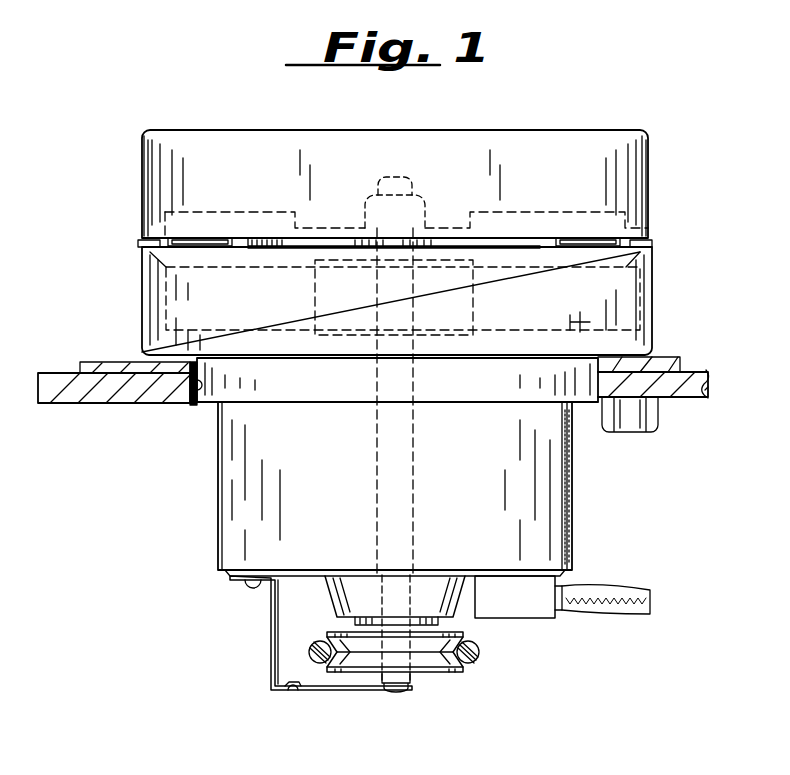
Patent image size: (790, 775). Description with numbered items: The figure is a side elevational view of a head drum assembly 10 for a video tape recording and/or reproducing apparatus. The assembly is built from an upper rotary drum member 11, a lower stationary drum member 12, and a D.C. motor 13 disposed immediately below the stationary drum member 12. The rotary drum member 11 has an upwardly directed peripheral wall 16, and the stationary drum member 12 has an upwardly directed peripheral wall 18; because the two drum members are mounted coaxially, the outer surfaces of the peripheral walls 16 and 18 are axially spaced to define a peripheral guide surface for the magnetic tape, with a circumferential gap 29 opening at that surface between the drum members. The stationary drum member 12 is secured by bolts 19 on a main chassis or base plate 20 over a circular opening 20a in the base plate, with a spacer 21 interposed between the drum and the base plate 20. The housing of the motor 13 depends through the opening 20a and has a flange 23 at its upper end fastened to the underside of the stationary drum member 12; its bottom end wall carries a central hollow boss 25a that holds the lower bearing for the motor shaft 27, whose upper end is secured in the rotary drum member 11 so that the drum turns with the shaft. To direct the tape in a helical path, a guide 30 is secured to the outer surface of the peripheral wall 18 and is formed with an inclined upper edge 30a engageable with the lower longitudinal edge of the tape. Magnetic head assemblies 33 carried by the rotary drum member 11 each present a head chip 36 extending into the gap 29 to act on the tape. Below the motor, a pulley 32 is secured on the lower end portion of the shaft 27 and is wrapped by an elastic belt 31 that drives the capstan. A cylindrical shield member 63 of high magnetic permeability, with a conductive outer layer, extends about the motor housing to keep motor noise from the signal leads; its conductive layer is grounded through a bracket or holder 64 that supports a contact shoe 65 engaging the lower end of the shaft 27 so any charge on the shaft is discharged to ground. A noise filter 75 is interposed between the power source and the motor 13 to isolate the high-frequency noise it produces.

The head drum assembly 10 is at (610, 122).
The upper rotary drum member 11 is at (658, 189).
The lower stationary drum member 12 is at (652, 302).
The D.C. motor 13 is at (572, 504).
The upwardly directed peripheral wall 16 is at (503, 136).
The upwardly directed peripheral wall 18 is at (146, 301).
The bolts 19 is at (632, 424).
The main chassis or base plate 20 is at (688, 392).
The circular opening 20a is at (196, 404).
The spacer 21 is at (666, 357).
The flange 23 is at (306, 404).
The central hollow boss 25a is at (322, 596).
The motor shaft 27 is at (405, 496).
The circumferential gap 29 is at (455, 240).
The guide 30 is at (502, 345).
The inclined upper edge 30a is at (285, 312).
The elastic belt 31 is at (478, 660).
The pulley 32 is at (356, 672).
The magnetic head assemblies 33 is at (204, 238).
The head chip 36 is at (140, 252).
The cylindrical shield member 63 is at (564, 548).
The bracket or holder 64 is at (273, 662).
The contact shoe 65 is at (398, 690).
The noise filter 75 is at (547, 618).